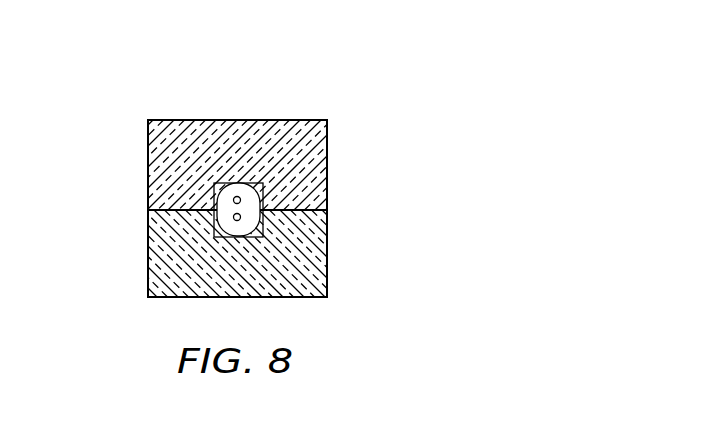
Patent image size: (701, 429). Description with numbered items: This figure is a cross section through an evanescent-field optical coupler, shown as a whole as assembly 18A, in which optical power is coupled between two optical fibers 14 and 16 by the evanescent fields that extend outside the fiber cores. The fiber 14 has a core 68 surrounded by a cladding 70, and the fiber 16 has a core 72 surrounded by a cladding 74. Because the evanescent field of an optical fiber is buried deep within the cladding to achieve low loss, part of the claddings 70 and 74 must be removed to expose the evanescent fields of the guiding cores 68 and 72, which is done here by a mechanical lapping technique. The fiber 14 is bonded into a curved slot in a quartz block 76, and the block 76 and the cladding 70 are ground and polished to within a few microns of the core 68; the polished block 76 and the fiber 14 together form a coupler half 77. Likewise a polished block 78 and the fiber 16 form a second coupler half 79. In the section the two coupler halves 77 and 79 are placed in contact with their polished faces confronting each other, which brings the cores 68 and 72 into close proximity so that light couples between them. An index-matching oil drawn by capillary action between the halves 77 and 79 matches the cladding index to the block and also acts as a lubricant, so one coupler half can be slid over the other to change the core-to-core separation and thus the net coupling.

The connector block assembly 18A is at (302, 71).
The optical fiber 14 is at (221, 186).
The optical fiber 16 is at (217, 238).
The core 68 is at (243, 190).
The cladding 70 is at (258, 188).
The core 72 is at (227, 217).
The cladding 74 is at (257, 238).
The quartz block 76 is at (148, 145).
The coupler half 77 is at (339, 150).
The polished block 78 is at (327, 242).
The coupler half 79 is at (347, 270).